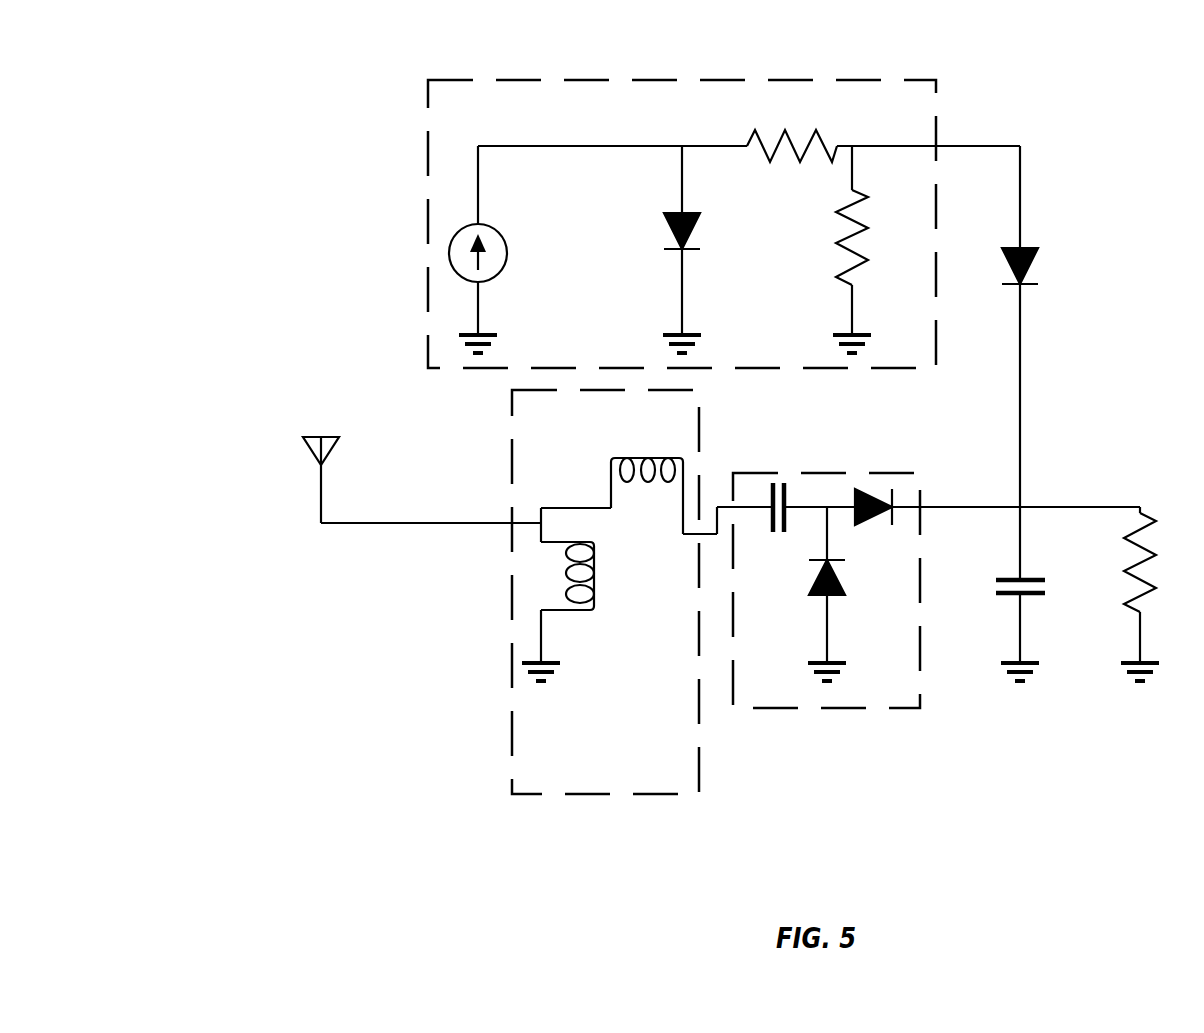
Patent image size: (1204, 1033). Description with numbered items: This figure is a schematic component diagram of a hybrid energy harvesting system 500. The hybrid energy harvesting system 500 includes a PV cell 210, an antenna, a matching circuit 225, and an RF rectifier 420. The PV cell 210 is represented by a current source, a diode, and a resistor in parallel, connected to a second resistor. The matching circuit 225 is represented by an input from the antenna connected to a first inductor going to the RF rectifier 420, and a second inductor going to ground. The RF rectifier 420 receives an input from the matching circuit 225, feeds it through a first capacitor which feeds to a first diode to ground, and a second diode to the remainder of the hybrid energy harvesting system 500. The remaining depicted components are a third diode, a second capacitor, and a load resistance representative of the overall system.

The hybrid energy harvesting system 500 is at (300, 60).
The PV cell 210 is at (427, 218).
The matching circuit 225 is at (512, 664).
The RF rectifier 420 is at (813, 710).